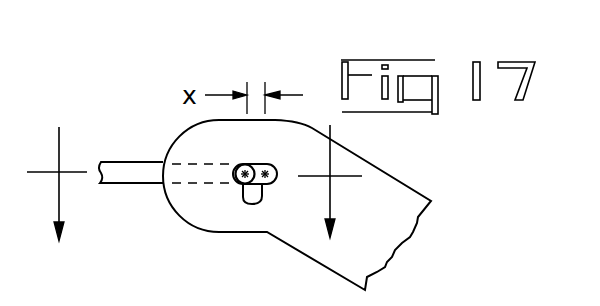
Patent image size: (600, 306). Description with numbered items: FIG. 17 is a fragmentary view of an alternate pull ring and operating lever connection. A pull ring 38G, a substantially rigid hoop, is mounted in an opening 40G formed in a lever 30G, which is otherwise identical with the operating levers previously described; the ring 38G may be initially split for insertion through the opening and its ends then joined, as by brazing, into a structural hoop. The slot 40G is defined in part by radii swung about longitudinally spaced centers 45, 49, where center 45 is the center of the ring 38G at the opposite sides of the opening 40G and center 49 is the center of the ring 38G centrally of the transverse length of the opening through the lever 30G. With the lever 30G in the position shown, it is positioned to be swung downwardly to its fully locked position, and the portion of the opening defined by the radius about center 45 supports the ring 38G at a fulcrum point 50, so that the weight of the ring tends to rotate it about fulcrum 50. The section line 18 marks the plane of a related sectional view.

The lever 30G is at (372, 165).
The pull ring 38G is at (149, 161).
The fulcrum 50 is at (247, 165).
The center 45 is at (236, 183).
The center 49 is at (270, 183).
The opening 40G is at (265, 198).
The section line 18- 18 is at (205, 183).